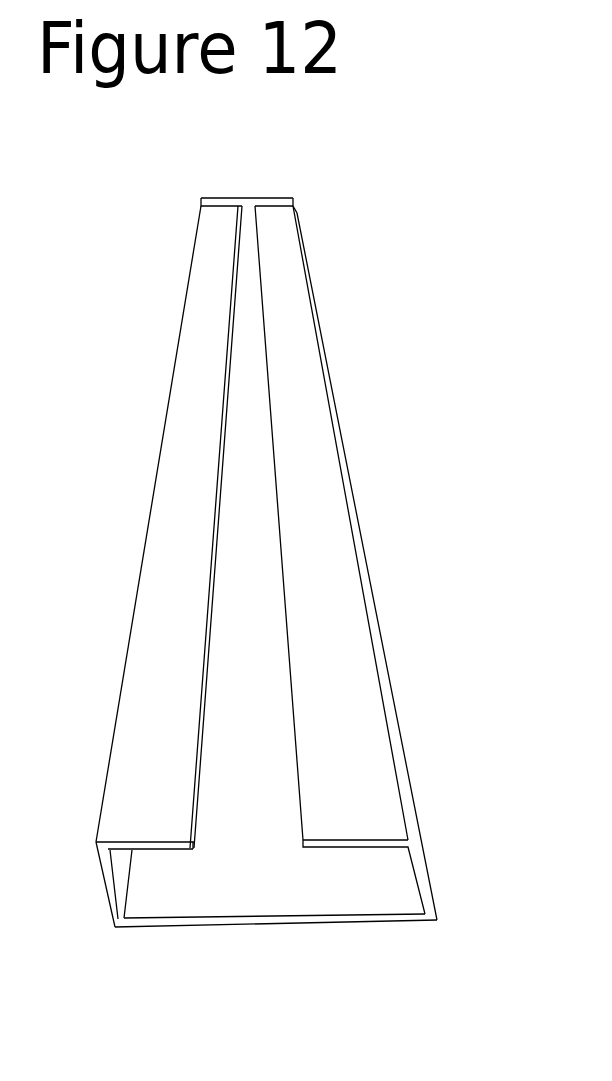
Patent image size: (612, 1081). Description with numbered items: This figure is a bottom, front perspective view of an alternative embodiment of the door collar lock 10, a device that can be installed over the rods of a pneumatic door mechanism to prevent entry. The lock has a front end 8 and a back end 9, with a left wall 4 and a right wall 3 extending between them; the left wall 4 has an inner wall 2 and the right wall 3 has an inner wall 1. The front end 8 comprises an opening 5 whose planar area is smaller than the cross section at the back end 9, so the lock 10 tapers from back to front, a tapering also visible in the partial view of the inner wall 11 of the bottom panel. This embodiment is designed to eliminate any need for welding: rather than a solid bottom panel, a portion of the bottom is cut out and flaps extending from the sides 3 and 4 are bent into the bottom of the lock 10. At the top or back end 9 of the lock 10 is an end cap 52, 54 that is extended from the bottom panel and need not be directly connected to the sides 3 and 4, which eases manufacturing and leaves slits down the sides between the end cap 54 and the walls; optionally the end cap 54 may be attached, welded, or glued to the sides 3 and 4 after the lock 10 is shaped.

The door collar lock 10 is at (103, 266).
The end cap 54 is at (222, 198).
The back end 9 is at (264, 187).
The end cap 52 is at (190, 604).
The right wall 3 is at (95, 647).
The left wall 4 is at (398, 770).
The inner wall of the bottom panel 11 is at (262, 766).
The inner wall 1 is at (131, 906).
The inner wall 2 is at (398, 903).
The opening 5 is at (228, 904).
The front end 8 is at (259, 950).